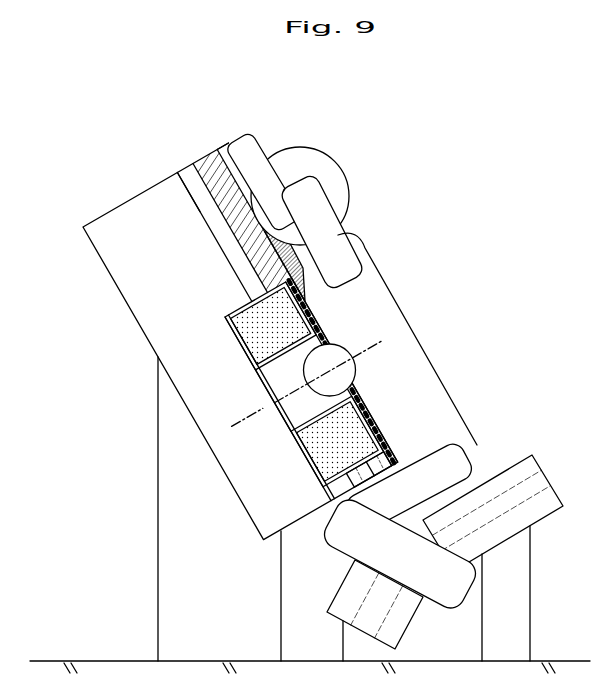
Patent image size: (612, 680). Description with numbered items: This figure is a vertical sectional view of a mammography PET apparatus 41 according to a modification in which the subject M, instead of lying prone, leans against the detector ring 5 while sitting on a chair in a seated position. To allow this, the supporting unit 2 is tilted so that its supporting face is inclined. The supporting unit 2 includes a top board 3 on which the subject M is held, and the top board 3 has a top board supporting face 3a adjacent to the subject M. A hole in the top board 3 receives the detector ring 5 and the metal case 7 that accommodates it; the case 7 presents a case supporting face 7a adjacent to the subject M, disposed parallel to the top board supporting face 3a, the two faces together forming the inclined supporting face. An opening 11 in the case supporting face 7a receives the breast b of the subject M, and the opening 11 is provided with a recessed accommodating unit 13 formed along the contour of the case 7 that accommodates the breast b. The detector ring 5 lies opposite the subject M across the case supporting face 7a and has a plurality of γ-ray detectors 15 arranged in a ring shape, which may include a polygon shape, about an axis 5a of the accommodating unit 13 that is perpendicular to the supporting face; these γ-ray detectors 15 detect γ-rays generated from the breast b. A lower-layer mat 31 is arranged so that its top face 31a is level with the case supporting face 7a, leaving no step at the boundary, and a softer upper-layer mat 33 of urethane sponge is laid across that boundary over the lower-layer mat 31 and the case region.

The supporting unit 2 is at (113, 208).
The top board 3 is at (192, 192).
The top board supporting face 3a is at (194, 181).
The lower-layer mat 31 is at (233, 222).
The top face 31a is at (281, 259).
The upper-layer mat 33 is at (227, 143).
The detector ring 5 is at (218, 324).
The axis 5a is at (238, 426).
The case 7 is at (237, 303).
The case supporting face 7a is at (316, 323).
The opening 11 is at (339, 380).
The accommodating unit 13 is at (262, 386).
The γ-ray detectors 15 is at (258, 338).
The mammography PET apparatus 41 is at (459, 185).
The breast b is at (328, 359).
The subject M is at (463, 591).